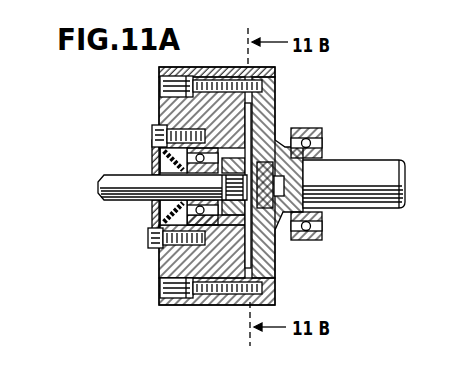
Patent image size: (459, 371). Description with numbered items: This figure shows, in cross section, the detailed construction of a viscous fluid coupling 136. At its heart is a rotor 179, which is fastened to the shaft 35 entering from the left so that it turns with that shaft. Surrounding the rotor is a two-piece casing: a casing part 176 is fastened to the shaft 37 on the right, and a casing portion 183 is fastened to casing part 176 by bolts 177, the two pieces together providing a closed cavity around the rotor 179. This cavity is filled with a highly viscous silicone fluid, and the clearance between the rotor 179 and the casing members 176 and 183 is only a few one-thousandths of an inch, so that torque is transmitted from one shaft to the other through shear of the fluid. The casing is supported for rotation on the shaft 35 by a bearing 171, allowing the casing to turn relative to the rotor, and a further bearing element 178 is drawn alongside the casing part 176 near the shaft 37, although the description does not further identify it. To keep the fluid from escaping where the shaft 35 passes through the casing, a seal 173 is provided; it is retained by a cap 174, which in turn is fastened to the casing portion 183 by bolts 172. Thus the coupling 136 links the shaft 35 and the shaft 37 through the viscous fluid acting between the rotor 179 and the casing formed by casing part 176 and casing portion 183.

The fluid coupling 136 is at (213, 306).
The casing portion 183 is at (168, 112).
The casing part 176 is at (272, 104).
The rotor 179 is at (251, 256).
The bearing 178 is at (306, 128).
The shaft 37 is at (334, 160).
The bearing 171 is at (166, 262).
The cap 174 is at (158, 217).
The seal 173 is at (157, 202).
The shaft 35 is at (127, 181).
The bolts 177 is at (186, 80).
The bolts 172 is at (149, 130).